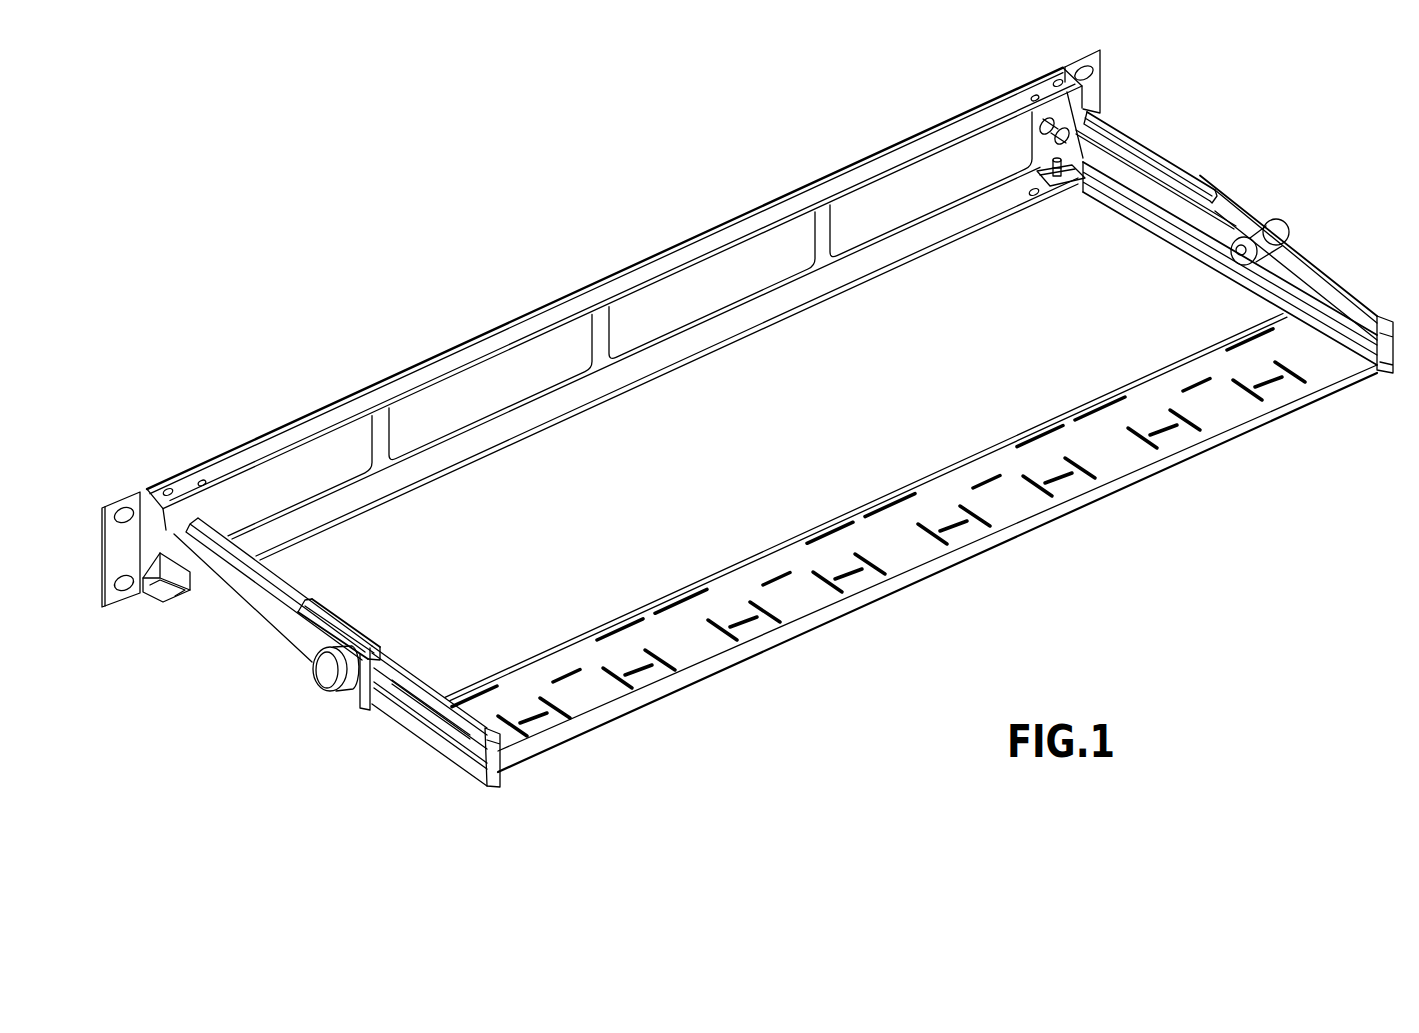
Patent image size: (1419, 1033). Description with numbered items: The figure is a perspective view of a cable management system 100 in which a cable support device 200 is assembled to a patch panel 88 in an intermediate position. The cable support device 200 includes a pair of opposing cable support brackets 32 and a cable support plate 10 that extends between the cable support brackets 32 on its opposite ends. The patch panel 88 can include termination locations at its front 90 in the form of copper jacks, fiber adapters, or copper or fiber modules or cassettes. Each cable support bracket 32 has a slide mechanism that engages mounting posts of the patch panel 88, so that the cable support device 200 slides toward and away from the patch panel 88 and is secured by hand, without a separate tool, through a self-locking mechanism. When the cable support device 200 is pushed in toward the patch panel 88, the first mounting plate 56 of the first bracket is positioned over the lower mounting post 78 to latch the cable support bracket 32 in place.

The cable management system 100 is at (605, 172).
The cable support device 200 is at (1070, 560).
The cable support plate 10 is at (922, 578).
The cable support bracket 32 is at (341, 710).
The first mounting plate 56 is at (1057, 177).
The lower mounting post 78 is at (1070, 181).
The patch panel 88 is at (318, 425).
The front 90 is at (461, 424).